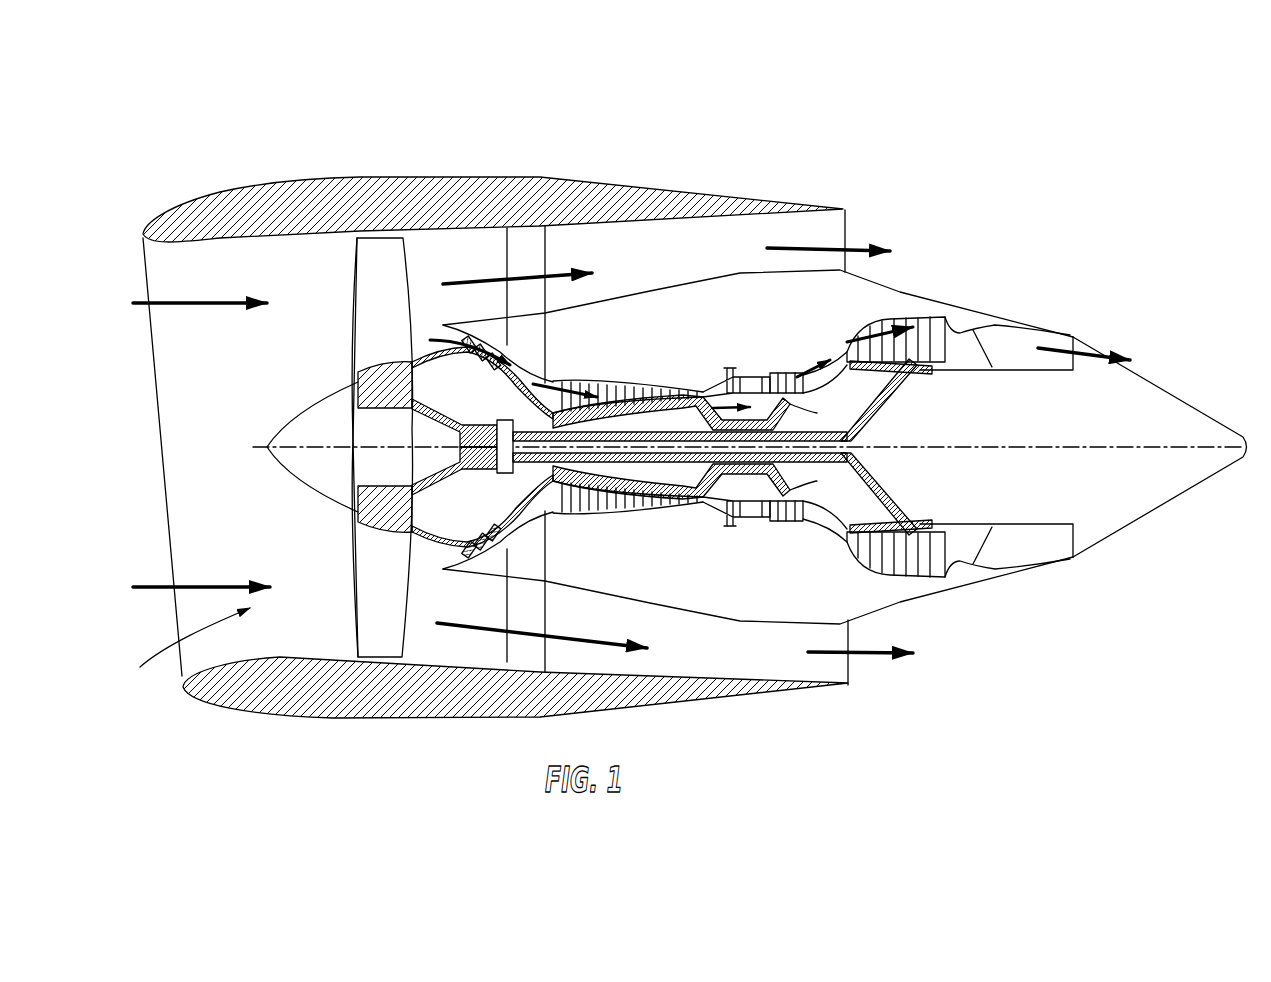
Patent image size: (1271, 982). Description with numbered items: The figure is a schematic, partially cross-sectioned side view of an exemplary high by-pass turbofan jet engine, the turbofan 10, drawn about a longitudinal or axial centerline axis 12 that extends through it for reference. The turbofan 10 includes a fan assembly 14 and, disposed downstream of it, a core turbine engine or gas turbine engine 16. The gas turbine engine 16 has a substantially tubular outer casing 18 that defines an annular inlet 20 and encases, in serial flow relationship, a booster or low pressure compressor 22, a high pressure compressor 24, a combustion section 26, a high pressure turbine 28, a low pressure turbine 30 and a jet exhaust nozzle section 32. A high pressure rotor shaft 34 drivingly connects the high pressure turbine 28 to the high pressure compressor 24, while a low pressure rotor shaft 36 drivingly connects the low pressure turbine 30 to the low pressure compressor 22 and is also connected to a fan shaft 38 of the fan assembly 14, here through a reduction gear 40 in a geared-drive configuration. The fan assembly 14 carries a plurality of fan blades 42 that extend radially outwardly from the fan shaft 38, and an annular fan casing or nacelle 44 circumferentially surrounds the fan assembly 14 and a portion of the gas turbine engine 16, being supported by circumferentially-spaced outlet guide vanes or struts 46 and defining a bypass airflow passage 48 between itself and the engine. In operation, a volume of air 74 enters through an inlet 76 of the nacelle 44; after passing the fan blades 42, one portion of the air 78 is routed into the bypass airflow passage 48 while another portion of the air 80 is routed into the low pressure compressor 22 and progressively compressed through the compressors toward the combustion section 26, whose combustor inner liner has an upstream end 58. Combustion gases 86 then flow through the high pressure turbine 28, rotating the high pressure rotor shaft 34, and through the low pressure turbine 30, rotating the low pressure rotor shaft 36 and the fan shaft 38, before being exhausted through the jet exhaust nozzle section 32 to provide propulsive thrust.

The turbofan 10 is at (988, 198).
The longitudinal or axial centerline axis 12 is at (1013, 447).
The fan assembly 14 is at (434, 249).
The core turbine engine 16 is at (740, 271).
The outer casing 18 is at (702, 610).
The annular inlet 20 is at (447, 553).
The low pressure compressor 22 is at (503, 522).
The high pressure compressor 24 is at (573, 507).
The combustion section 26 is at (748, 510).
The high pressure turbine 28 is at (797, 500).
The low pressure turbine 30 is at (928, 588).
The jet exhaust nozzle section 32 is at (993, 564).
The high pressure rotor shaft 34 is at (792, 422).
The low pressure rotor shaft 36 is at (883, 403).
The fan shaft 38 is at (413, 410).
The reduction gear 40 is at (500, 416).
The fan blades 42 is at (373, 273).
The nacelle 44 is at (358, 178).
The outlet guide vanes 46 is at (550, 260).
The bypass airflow passage 48 is at (673, 273).
The upstream end of inner liner 58 is at (553, 383).
The air 74 is at (180, 303).
The inlet 76 is at (183, 657).
The bypass air 78 is at (860, 248).
The core air 80 is at (443, 333).
The combustion gases 86 is at (873, 330).